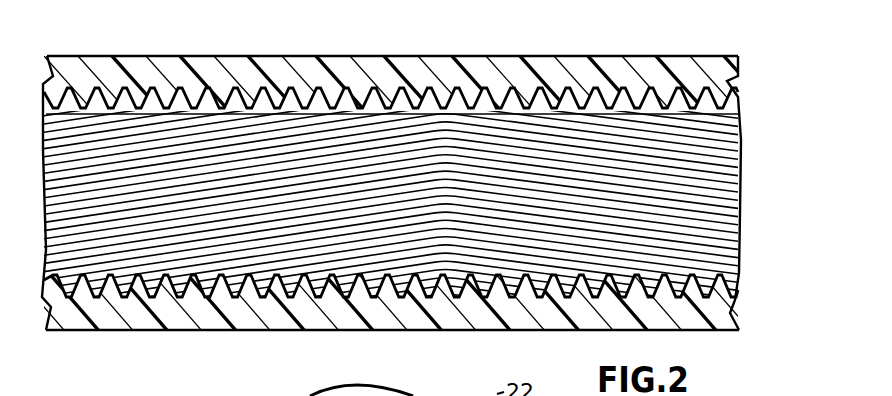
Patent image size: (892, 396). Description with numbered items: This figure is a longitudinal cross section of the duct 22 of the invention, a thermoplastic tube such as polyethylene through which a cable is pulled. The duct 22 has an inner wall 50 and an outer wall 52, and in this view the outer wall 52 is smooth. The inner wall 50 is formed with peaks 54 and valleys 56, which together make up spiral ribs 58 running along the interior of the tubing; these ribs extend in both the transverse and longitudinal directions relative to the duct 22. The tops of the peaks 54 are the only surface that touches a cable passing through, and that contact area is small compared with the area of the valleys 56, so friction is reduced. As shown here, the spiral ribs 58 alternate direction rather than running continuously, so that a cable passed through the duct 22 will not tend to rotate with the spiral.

The duct 22 is at (409, 181).
The inner wall 50 is at (739, 116).
The outer wall 52 is at (505, 57).
The peaks 54 is at (728, 260).
The valleys 56 is at (729, 302).
The spiral ribs 58 is at (688, 200).